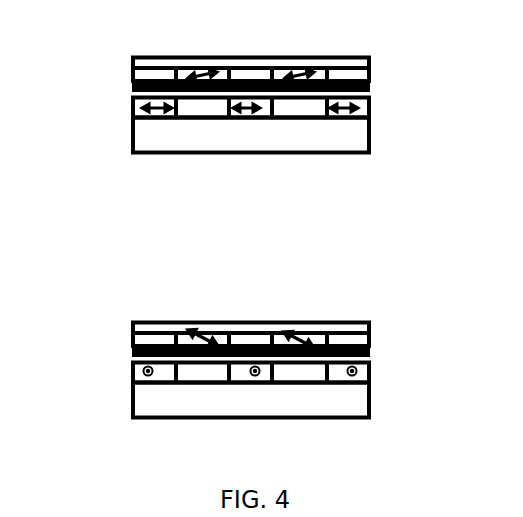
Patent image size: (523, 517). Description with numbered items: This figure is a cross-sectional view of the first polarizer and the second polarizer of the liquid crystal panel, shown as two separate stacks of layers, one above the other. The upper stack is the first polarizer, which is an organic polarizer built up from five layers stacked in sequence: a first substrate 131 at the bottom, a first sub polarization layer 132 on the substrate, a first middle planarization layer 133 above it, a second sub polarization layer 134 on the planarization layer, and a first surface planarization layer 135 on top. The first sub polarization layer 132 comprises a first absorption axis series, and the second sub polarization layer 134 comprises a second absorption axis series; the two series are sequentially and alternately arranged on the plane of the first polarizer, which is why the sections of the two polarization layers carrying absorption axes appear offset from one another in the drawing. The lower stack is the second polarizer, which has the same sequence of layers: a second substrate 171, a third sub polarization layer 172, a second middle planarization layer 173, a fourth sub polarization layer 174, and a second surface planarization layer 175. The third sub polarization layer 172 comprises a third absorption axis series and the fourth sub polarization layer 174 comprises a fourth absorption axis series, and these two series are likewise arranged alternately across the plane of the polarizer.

The first substrate 131 is at (131, 134).
The first sub polarization layer 132 is at (372, 111).
The first middle planarization layer 133 is at (372, 90).
The second sub polarization layer 134 is at (170, 75).
The first surface planarization layer 135 is at (145, 55).
The second substrate 171 is at (131, 399).
The third sub polarization layer 172 is at (372, 376).
The second middle planarization layer 173 is at (372, 355).
The fourth sub polarization layer 174 is at (170, 340).
The second surface planarization layer 175 is at (145, 319).